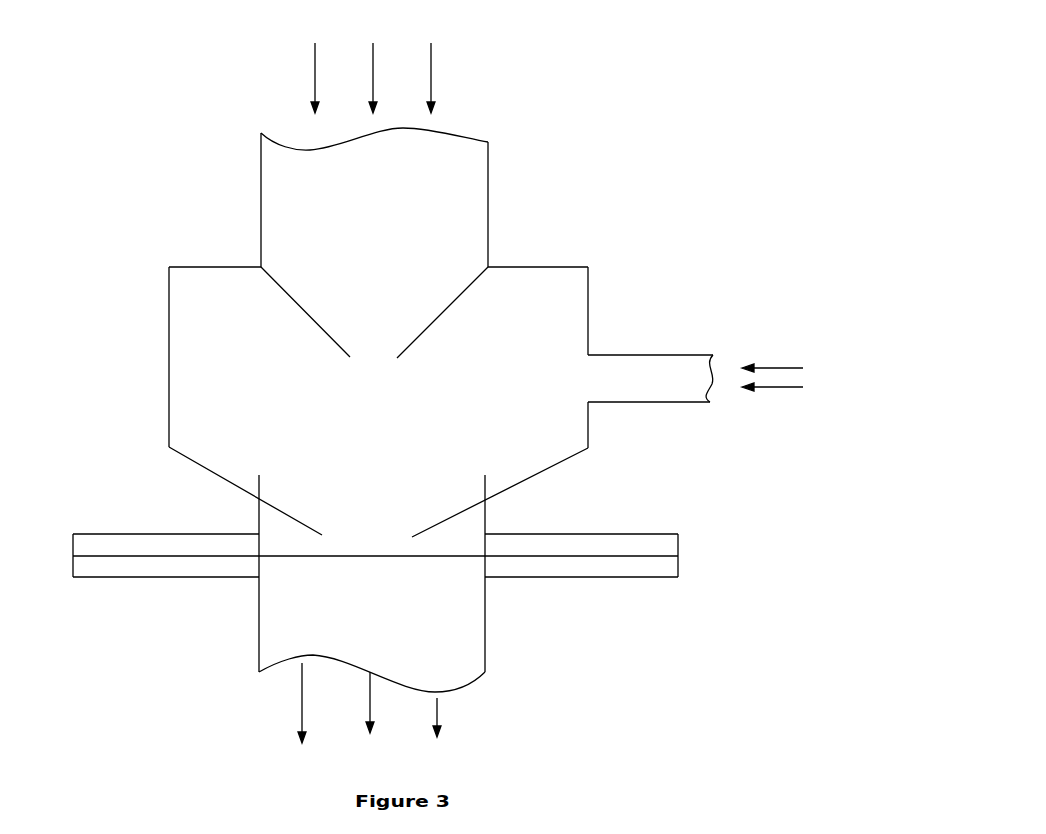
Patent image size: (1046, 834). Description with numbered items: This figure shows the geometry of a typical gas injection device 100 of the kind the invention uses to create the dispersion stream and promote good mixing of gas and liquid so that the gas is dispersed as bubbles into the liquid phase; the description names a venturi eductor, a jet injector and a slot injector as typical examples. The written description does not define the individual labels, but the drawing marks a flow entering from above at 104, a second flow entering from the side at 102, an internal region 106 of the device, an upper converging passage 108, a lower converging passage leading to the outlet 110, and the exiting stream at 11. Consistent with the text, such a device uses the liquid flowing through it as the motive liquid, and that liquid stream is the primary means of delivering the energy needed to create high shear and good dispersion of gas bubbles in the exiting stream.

The mixing device 100 is at (689, 179).
The side inlet flow 102 is at (718, 378).
The top inlet flow 104 is at (443, 68).
The chamber body 106 is at (332, 430).
The upper nozzle 108 is at (377, 352).
The lower nozzle outlet 110 is at (395, 533).
The outlet flow 11 is at (458, 711).